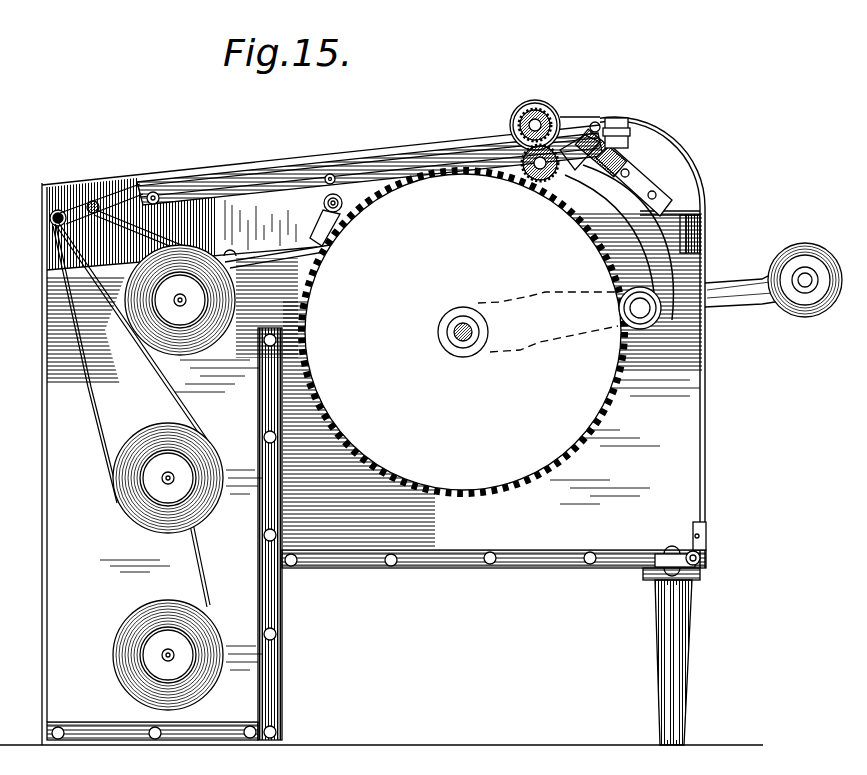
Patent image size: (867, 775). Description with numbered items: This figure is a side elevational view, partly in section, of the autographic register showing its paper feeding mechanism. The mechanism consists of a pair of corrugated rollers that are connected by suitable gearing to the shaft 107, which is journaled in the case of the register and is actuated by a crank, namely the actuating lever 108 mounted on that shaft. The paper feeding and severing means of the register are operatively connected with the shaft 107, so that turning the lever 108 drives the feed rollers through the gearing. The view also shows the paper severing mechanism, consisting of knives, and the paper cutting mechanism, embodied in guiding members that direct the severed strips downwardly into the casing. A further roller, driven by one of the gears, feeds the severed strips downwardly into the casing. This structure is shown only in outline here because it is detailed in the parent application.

The shaft 107 is at (465, 340).
The actuating lever 108 is at (726, 287).